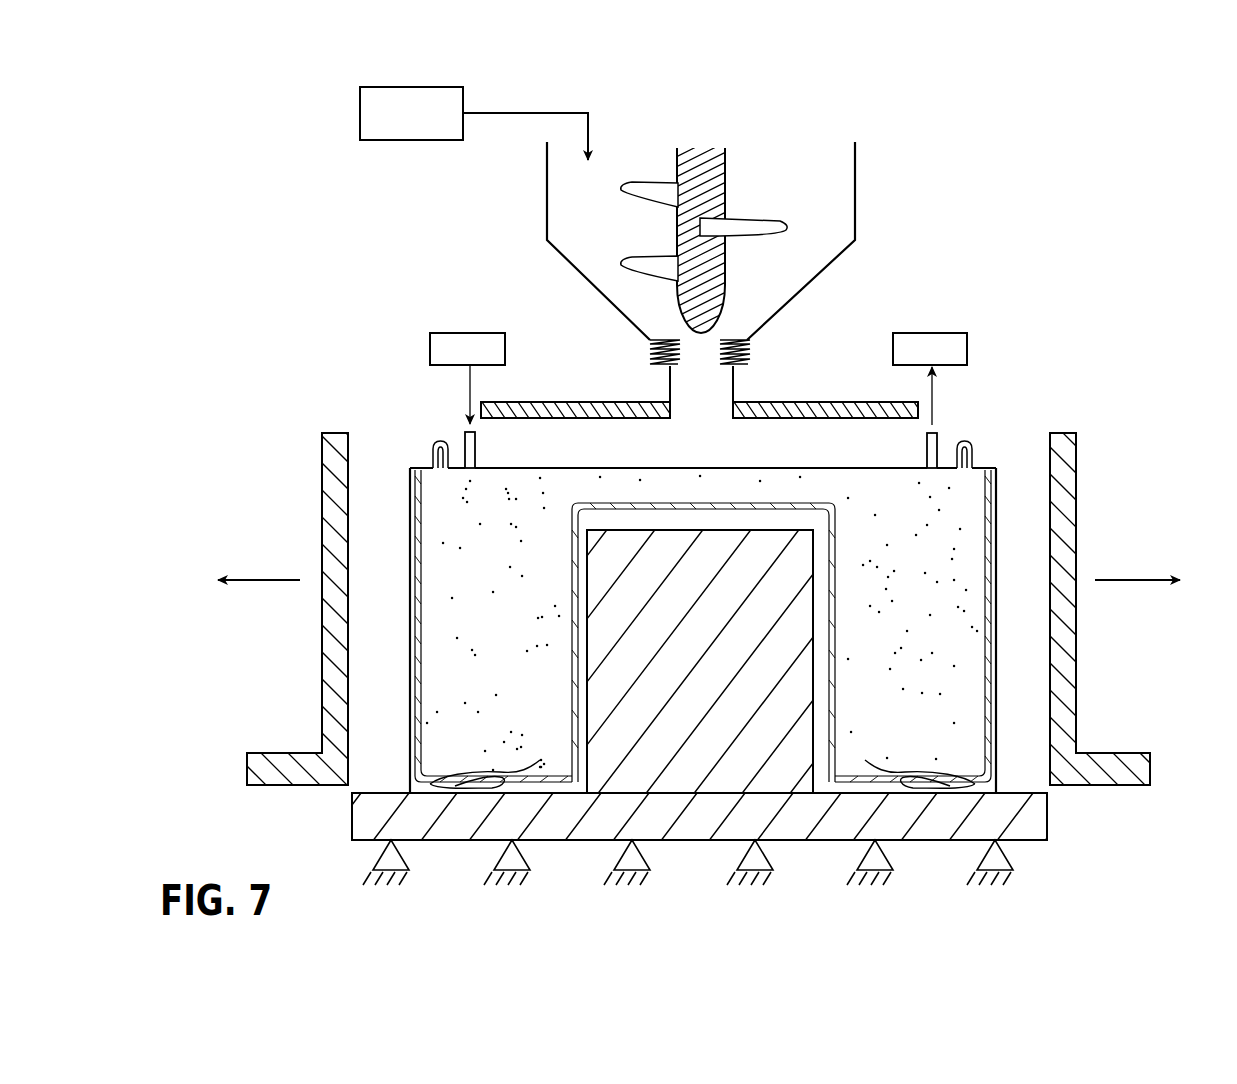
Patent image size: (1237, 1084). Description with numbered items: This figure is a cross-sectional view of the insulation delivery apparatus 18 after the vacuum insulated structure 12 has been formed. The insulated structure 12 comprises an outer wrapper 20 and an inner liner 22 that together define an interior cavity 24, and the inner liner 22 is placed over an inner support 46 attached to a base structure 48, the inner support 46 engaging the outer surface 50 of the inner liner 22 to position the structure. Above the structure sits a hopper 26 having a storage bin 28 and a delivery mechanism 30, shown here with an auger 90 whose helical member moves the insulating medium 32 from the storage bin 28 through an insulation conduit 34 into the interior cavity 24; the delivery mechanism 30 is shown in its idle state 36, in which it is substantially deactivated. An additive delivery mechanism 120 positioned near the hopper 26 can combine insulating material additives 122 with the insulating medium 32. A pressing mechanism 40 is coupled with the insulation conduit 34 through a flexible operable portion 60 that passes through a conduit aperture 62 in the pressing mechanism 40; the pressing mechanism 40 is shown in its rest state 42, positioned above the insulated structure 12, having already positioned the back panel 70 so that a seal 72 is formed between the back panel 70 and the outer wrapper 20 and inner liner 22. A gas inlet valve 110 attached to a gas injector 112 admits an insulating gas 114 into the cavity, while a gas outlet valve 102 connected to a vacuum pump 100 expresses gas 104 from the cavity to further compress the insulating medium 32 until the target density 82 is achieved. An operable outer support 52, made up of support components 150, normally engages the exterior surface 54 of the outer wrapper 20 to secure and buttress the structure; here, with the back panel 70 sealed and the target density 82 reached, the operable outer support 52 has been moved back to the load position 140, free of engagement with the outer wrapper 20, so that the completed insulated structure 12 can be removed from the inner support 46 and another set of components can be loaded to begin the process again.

The insulated structure 12 is at (687, 641).
The insulation delivery apparatus 18 is at (436, 243).
The outer wrapper 20 is at (408, 628).
The inner liner 22 is at (828, 710).
The interior cavity 24 is at (962, 696).
The hopper 26 is at (666, 215).
The storage bin 28 is at (547, 190).
The delivery mechanism 30 is at (633, 225).
The insulating medium 32 is at (812, 185).
The insulation conduit 34 is at (740, 385).
The idle state 36 is at (687, 210).
The pressing mechanism 40 is at (580, 419).
The rest state 42 is at (752, 421).
The inner support 46 is at (620, 796).
The base structure 48 is at (750, 876).
The outer surface 50 is at (560, 687).
The operable outer support 52 is at (1090, 545).
The exterior surface 54 is at (1000, 648).
The operable portion 60 is at (648, 355).
The conduit aperture 62 is at (728, 410).
The back panel 70 is at (912, 466).
The seal 72 is at (980, 452).
The target density 82 is at (962, 523).
The auger 90 is at (632, 183).
The vacuum pump 100 is at (950, 331).
The gas outlet valve 102 is at (938, 453).
The gas 104 is at (932, 400).
The gas inlet valve 110 is at (462, 438).
The gas injector 112 is at (428, 348).
The insulating gas 114 is at (470, 379).
The additive delivery mechanism 120 is at (383, 145).
The insulating material additives 122 is at (360, 114).
The load position 140 is at (1118, 790).
The support components 150 is at (321, 450).